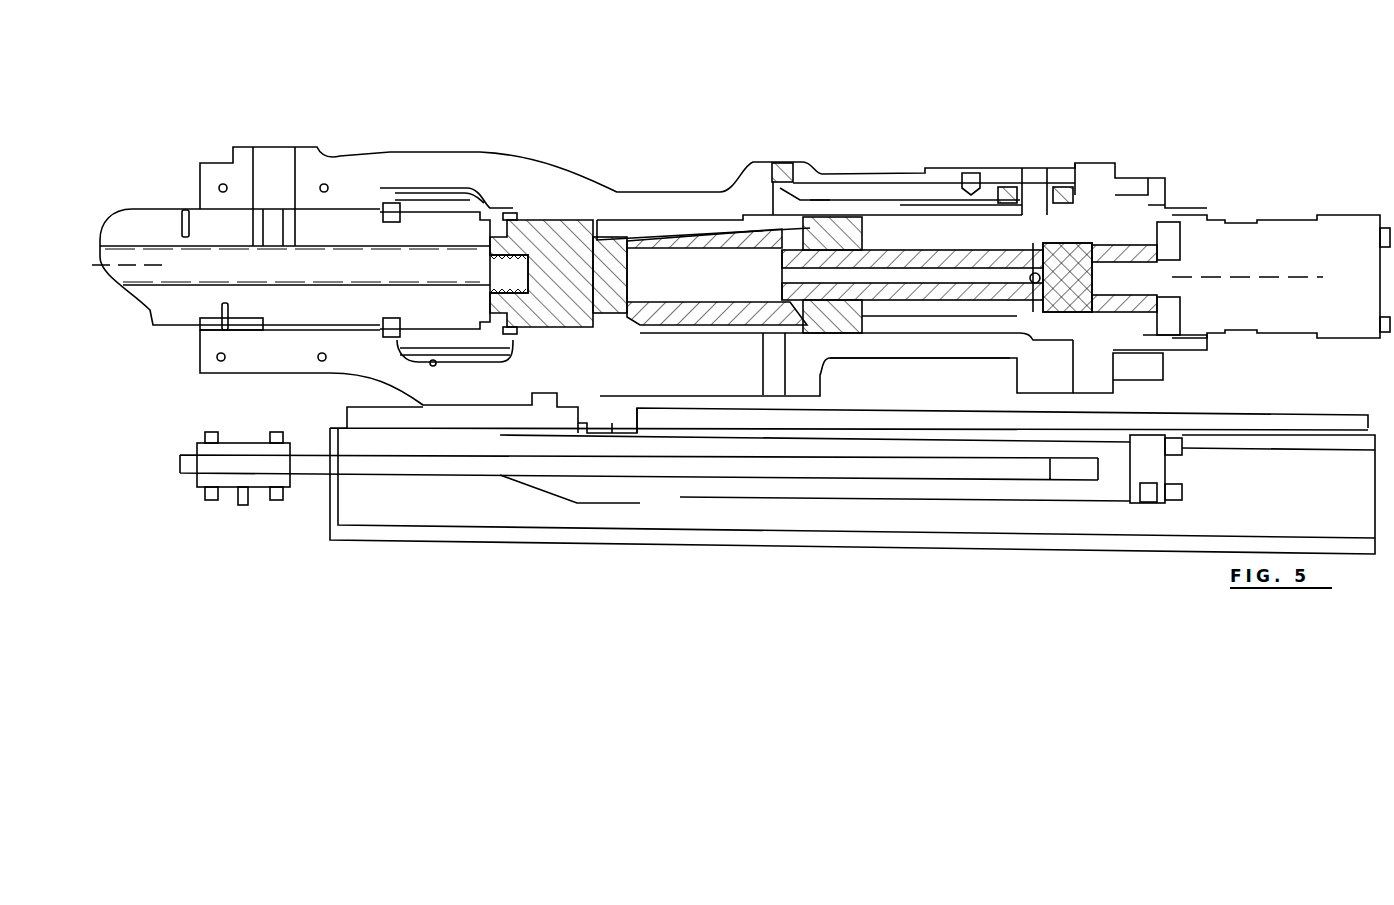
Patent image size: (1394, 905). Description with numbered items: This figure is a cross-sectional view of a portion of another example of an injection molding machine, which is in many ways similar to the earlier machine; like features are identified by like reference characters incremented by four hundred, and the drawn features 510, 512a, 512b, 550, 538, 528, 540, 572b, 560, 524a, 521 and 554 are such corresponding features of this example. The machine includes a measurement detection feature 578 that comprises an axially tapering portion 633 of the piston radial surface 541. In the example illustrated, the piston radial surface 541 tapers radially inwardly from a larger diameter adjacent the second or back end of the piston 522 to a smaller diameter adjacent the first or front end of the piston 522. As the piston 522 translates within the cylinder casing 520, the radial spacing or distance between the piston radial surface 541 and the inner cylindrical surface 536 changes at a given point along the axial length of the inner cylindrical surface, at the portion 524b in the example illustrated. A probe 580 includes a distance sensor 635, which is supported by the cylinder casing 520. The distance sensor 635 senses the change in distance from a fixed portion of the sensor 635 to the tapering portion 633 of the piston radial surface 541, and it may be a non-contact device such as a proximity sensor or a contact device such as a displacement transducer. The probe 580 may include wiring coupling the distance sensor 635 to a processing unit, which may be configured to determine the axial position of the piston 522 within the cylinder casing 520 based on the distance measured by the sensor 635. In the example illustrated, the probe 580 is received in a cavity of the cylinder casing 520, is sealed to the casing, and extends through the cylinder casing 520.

The tool assembly 510 is at (1031, 80).
The first clamp block 512a is at (270, 125).
The second clamp block 512b is at (1061, 146).
The end cap 550 is at (1088, 186).
The housing 538 is at (672, 212).
The bearing block 528 is at (820, 240).
The inner cylindrical surface 536 is at (885, 228).
The portion of the inner cylindrical surface 524b is at (605, 218).
The coupling block 540 is at (535, 244).
The piston 522 is at (503, 248).
The drive tube 572b is at (895, 274).
The drive rod 560 is at (773, 271).
The piston radial surface 541 is at (640, 283).
The lower sleeve 524a is at (935, 333).
The measurement detection feature 578 is at (598, 308).
The axially tapering portion 633 is at (642, 315).
The probe 580 is at (886, 364).
The distance sensor 635 is at (780, 355).
The cylinder casing 520 is at (699, 395).
The actuator body 521 is at (1280, 277).
The flange 554 is at (1280, 322).